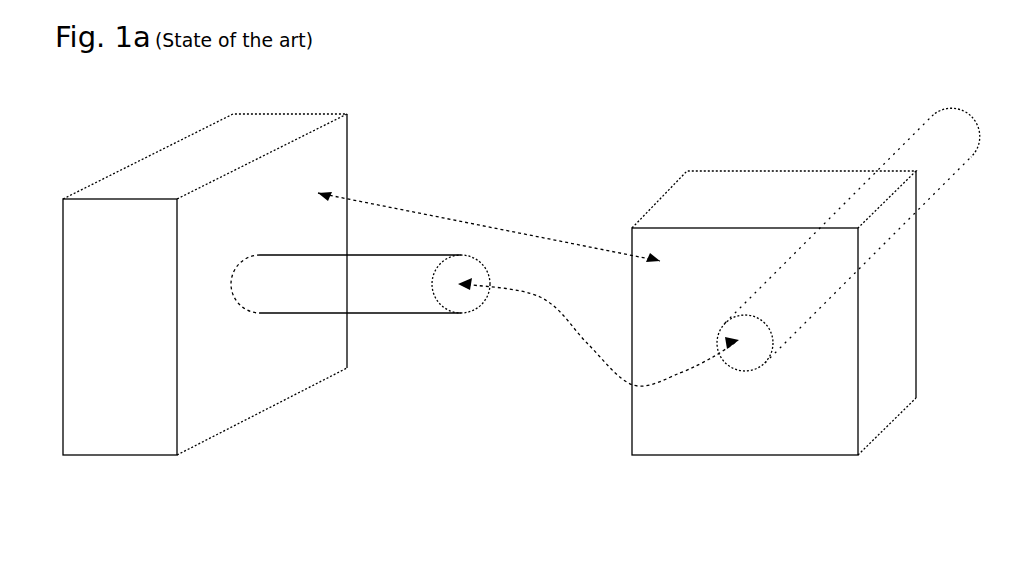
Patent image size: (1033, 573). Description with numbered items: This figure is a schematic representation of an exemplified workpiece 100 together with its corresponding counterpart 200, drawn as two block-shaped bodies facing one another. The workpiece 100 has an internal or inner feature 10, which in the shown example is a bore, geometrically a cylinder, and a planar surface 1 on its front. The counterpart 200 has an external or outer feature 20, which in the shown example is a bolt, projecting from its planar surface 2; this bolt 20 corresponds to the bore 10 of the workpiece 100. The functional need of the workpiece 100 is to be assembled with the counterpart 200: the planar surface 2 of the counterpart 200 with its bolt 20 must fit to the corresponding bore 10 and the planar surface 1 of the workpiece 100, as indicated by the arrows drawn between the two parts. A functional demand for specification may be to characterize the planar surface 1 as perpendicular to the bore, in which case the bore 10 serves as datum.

The planar surface 1 is at (753, 351).
The internal feature 10 is at (793, 302).
The workpiece 100 is at (765, 436).
The planar surface 2 is at (205, 300).
The external feature 20 is at (375, 288).
The counterpart 200 is at (133, 316).